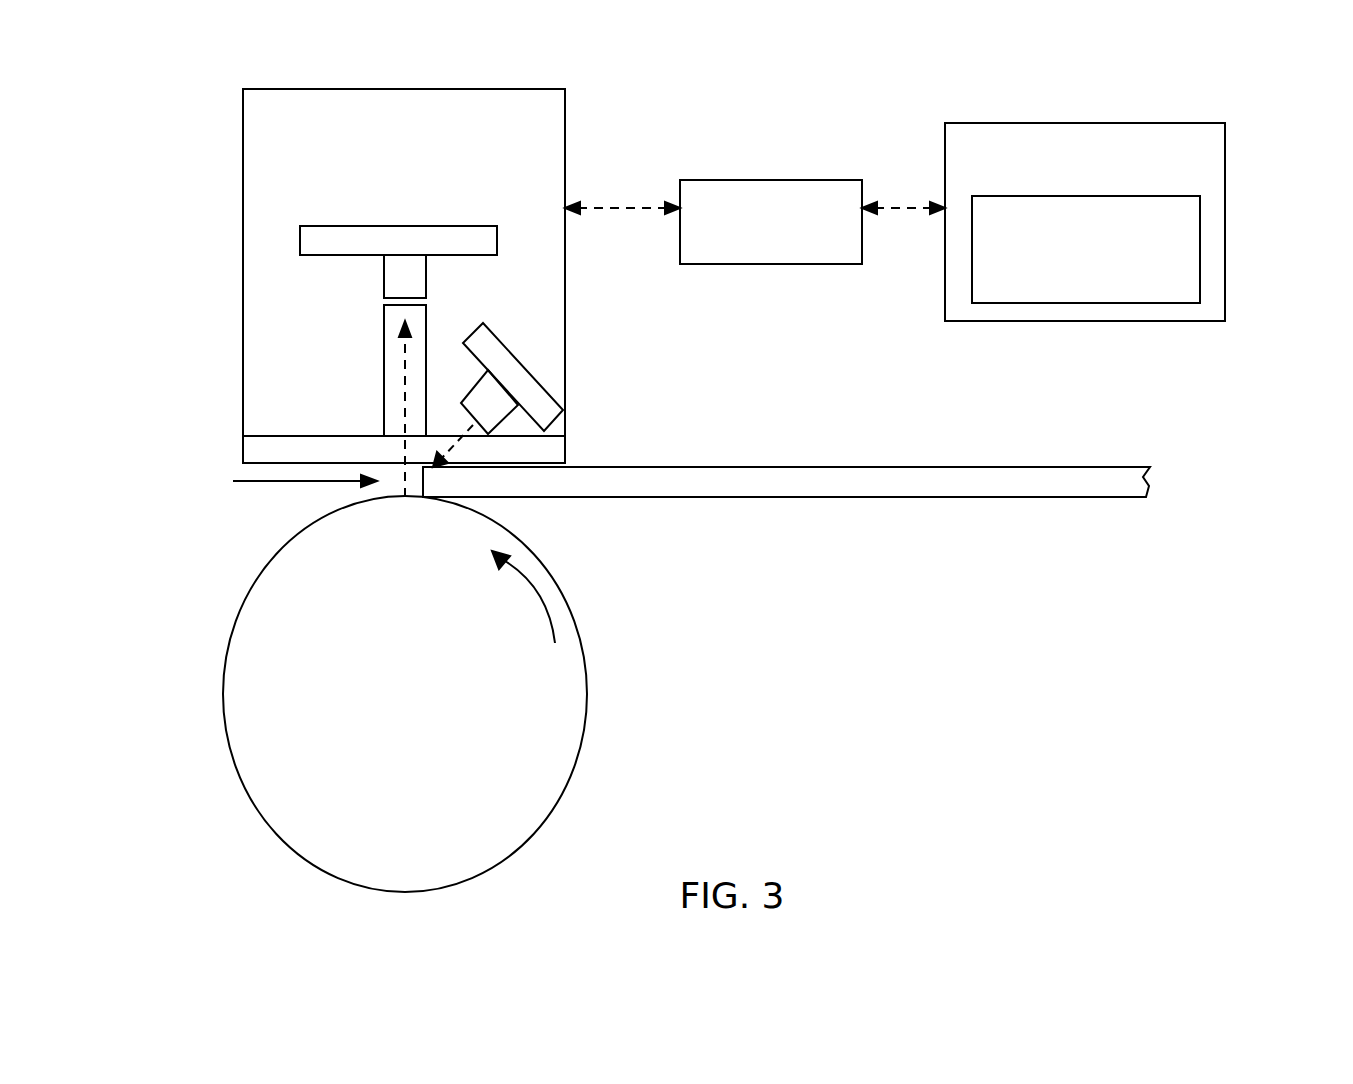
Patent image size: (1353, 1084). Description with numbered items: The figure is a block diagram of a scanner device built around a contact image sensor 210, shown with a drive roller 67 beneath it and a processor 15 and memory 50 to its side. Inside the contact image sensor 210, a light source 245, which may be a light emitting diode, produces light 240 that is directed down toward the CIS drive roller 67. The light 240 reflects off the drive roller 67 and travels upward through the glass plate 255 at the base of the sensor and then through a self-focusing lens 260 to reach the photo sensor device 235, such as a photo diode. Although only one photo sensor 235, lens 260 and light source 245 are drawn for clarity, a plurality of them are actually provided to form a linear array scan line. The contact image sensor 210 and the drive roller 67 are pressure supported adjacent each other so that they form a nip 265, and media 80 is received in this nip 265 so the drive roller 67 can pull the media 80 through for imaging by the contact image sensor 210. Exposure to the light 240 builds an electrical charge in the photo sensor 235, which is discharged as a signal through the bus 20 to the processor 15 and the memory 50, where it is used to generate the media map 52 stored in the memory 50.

The contact image sensor 210 is at (243, 153).
The photo sensor device 235 is at (300, 233).
The self-focusing lens 260 is at (384, 330).
The light 240 is at (405, 375).
The glass plate 255 is at (243, 450).
The light source 245 is at (520, 360).
The nip 265 is at (278, 481).
The media 80 is at (835, 467).
The CIS drive roller 67 is at (579, 645).
The processor 15 is at (732, 180).
The bus 20 is at (617, 208).
The memory 50 is at (1225, 196).
The media map 52 is at (1200, 248).